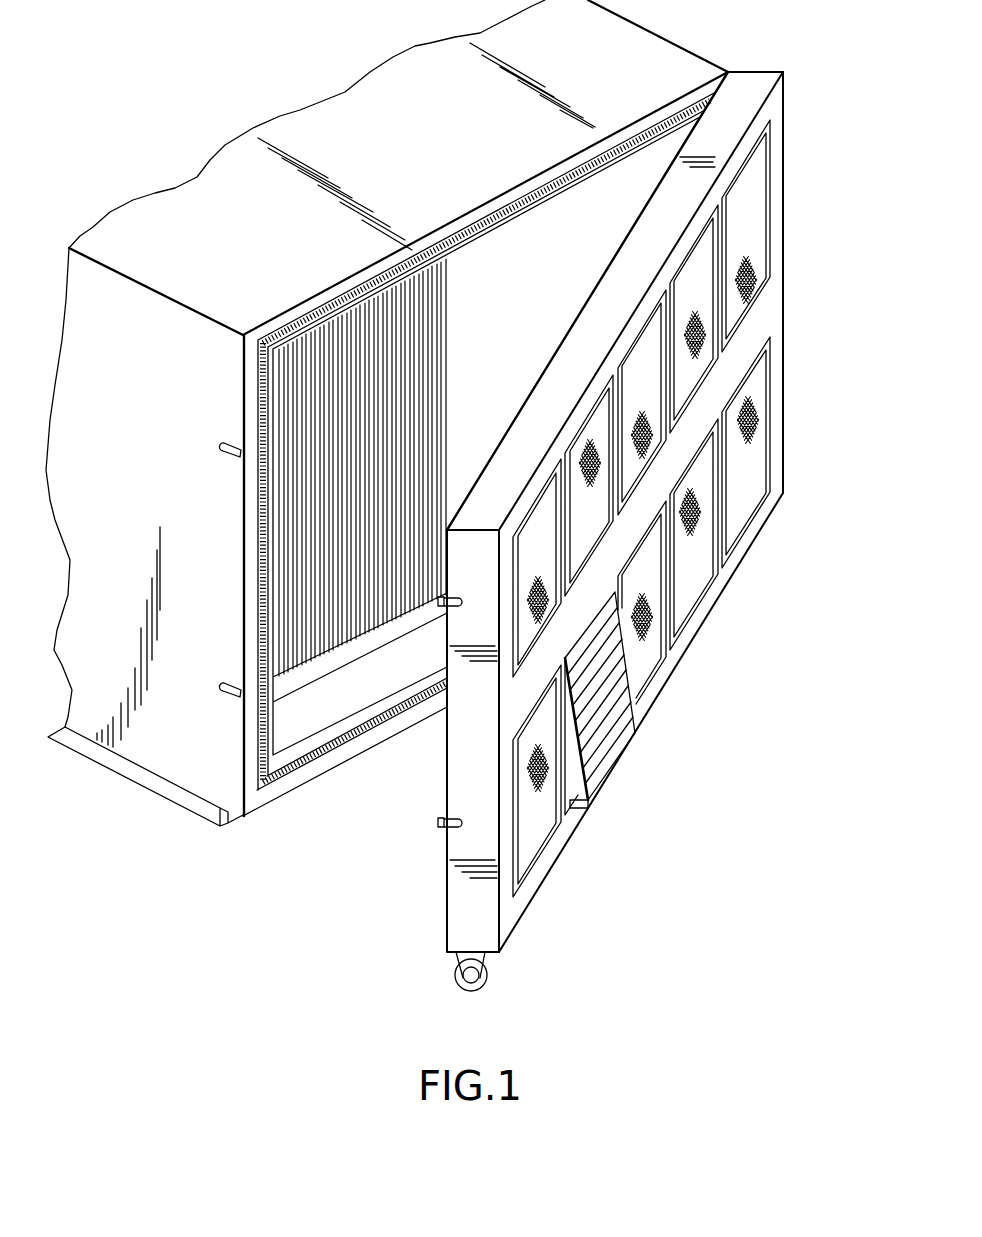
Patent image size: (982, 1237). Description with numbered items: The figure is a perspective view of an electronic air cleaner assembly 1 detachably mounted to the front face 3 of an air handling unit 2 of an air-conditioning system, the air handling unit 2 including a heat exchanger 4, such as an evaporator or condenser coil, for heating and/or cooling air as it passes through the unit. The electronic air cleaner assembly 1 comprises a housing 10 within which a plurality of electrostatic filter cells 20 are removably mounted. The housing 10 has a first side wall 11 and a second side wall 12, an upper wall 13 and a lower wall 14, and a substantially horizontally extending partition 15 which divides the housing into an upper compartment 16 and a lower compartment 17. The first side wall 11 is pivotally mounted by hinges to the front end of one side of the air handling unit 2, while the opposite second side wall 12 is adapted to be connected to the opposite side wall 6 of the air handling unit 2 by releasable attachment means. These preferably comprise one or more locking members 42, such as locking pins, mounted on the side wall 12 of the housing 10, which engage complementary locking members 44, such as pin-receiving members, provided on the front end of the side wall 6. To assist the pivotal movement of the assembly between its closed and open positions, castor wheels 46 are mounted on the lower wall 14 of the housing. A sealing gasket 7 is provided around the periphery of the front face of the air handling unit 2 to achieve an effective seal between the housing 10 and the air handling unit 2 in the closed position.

The electronic air cleaner assembly 1 is at (463, 507).
The air handling unit 2 is at (387, 453).
The front face 3 is at (298, 729).
The heat exchanger 4 is at (276, 600).
The side wall 6 is at (111, 478).
The sealing gasket 7 is at (262, 390).
The housing 10 is at (611, 515).
The first side wall 11 is at (786, 284).
The second side wall 12 is at (460, 886).
The upper wall 13 is at (740, 93).
The lower wall 14 is at (708, 620).
The partition 15 is at (733, 372).
The upper compartment 16 is at (755, 226).
The lower compartment 17 is at (740, 456).
The electrostatic filter cell 20 is at (606, 700).
The locking member 42 is at (441, 818).
The complementary locking member 44 is at (226, 694).
The castor wheel 46 is at (458, 986).